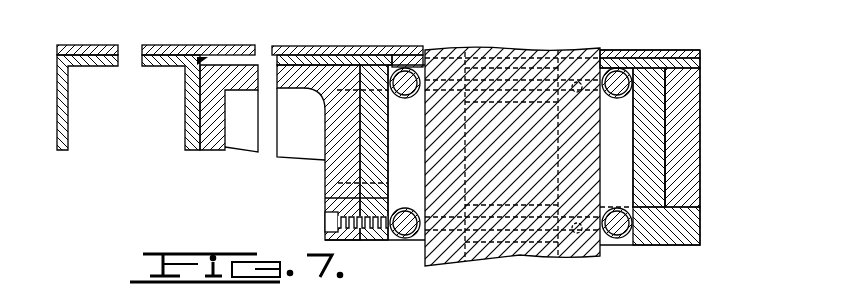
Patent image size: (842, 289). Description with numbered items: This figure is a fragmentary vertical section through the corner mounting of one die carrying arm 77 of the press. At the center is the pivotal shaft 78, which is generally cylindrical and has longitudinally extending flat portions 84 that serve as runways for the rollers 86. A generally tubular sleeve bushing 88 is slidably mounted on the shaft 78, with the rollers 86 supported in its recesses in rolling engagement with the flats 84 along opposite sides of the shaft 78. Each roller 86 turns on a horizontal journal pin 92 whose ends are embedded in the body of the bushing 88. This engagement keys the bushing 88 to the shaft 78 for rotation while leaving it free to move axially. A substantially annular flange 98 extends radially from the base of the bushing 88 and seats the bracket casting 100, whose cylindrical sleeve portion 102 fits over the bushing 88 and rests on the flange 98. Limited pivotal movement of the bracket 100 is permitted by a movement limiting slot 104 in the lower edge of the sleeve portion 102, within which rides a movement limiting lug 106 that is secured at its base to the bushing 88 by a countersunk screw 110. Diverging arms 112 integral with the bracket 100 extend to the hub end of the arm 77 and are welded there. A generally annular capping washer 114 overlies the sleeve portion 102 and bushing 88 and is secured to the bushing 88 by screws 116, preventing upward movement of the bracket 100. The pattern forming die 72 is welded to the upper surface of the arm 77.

The pattern forming die 72 is at (297, 43).
The arm 77 is at (70, 111).
The pivotal shaft 78 is at (533, 48).
The flat portion 84 is at (422, 173).
The roller 86 is at (402, 99).
The sleeve bushing 88 is at (668, 40).
The journal pin 92 is at (409, 67).
The annular flange 98 is at (700, 220).
The bracket casting 100 is at (705, 75).
The cylindrical sleeve portion 102 is at (325, 138).
The movement limiting slot 104 is at (338, 182).
The movement limiting lug 106 is at (325, 198).
The countersunk screw 110 is at (328, 217).
The diverging arm 112 is at (293, 0).
The capping washer 114 is at (313, 53).
The screw 116 is at (414, 54).